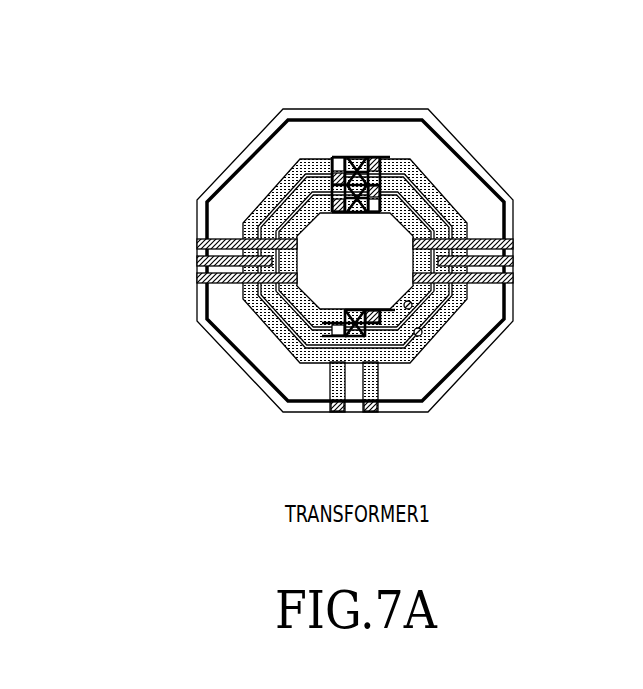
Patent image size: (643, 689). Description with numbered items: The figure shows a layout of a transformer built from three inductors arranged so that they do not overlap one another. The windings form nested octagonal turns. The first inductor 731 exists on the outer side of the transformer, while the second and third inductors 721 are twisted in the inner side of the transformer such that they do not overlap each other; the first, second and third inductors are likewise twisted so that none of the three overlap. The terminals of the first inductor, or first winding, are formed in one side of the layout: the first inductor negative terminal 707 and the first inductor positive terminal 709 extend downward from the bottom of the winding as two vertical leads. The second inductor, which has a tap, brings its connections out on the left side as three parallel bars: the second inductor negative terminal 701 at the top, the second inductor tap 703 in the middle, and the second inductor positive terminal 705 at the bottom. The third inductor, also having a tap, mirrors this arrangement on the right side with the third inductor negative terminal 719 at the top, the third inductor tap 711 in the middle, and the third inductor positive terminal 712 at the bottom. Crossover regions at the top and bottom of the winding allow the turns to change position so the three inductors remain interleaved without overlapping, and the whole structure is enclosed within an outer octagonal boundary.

The terminal L2_N 701 is at (136, 240).
The tap T2 703 is at (154, 264).
The terminal L2_P 705 is at (136, 290).
The terminal L1_N 707 is at (320, 451).
The terminal L1_P 709 is at (388, 451).
The tap T3 711 is at (553, 268).
The terminal L3_P 712 is at (574, 295).
The terminal L3_N 719 is at (575, 243).
The second and third inductors 721 is at (420, 330).
The first inductor 731 is at (433, 340).